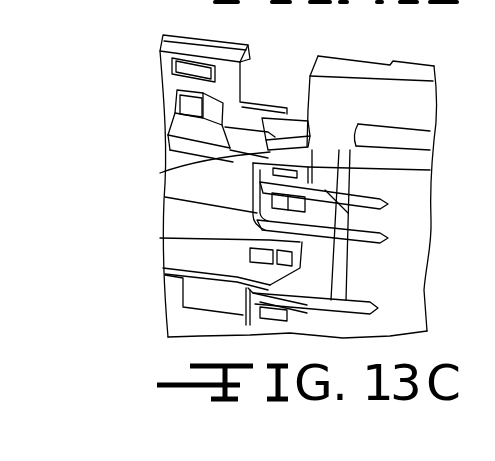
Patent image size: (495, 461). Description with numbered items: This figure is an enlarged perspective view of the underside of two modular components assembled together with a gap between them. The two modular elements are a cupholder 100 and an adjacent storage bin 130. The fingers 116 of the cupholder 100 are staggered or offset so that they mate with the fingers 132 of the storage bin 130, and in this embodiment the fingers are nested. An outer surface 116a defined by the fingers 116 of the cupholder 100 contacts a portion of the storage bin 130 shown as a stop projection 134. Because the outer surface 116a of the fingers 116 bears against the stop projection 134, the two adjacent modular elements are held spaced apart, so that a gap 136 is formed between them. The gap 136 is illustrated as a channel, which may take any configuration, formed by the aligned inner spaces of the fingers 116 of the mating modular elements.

The cupholder 100 is at (138, 111).
The fingers 116 is at (262, 160).
The outer surface 116a is at (333, 147).
The storage bin 130 is at (400, 270).
The fingers 132 is at (335, 227).
The stop projection 134 is at (350, 178).
The gap 136 is at (295, 121).